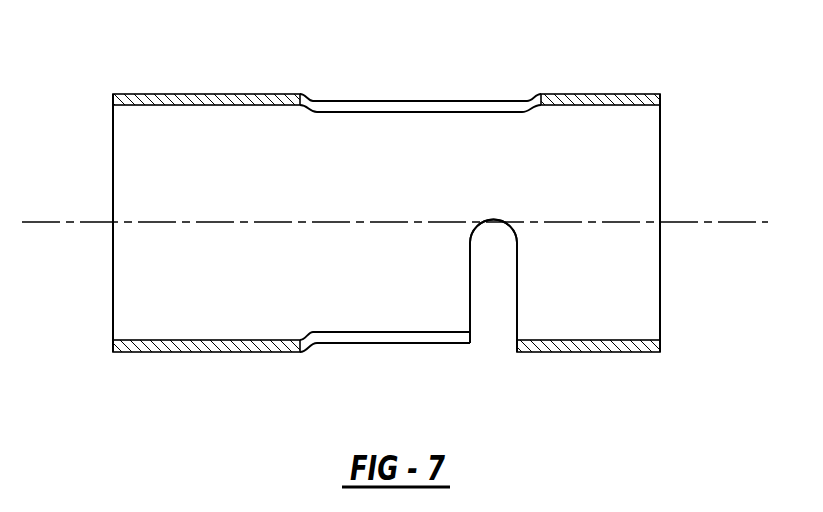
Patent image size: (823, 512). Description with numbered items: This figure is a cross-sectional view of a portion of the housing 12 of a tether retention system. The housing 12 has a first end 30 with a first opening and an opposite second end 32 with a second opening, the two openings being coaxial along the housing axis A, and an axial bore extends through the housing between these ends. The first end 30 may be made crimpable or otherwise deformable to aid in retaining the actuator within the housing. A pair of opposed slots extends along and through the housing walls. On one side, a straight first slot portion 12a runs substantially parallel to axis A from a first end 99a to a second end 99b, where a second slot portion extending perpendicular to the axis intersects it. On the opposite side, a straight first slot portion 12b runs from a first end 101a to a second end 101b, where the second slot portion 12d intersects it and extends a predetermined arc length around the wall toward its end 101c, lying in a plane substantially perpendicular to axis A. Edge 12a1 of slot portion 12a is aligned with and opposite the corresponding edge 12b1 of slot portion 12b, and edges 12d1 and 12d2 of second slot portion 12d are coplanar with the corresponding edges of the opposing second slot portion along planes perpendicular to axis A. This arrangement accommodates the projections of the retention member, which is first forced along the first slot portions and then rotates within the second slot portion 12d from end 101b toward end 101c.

The housing 12 is at (420, 223).
The first slot portion 12a is at (420, 59).
The slot edge 12a1 is at (454, 111).
The first slot portion 12b is at (412, 379).
The slot edge 12b1 is at (448, 338).
The second slot portion 12d is at (570, 274).
The slot edge 12d1 is at (470, 263).
The slot edge 12d2 is at (518, 246).
The first end 30 is at (155, 94).
The second end 32 is at (648, 93).
The first slot portion first end 99a is at (318, 96).
The first slot portion second end 99b is at (535, 97).
The first slot portion first end 101a is at (312, 349).
The first slot portion second end 101b is at (497, 341).
The second slot portion end 101c is at (493, 236).
The housing axis A is at (43, 223).